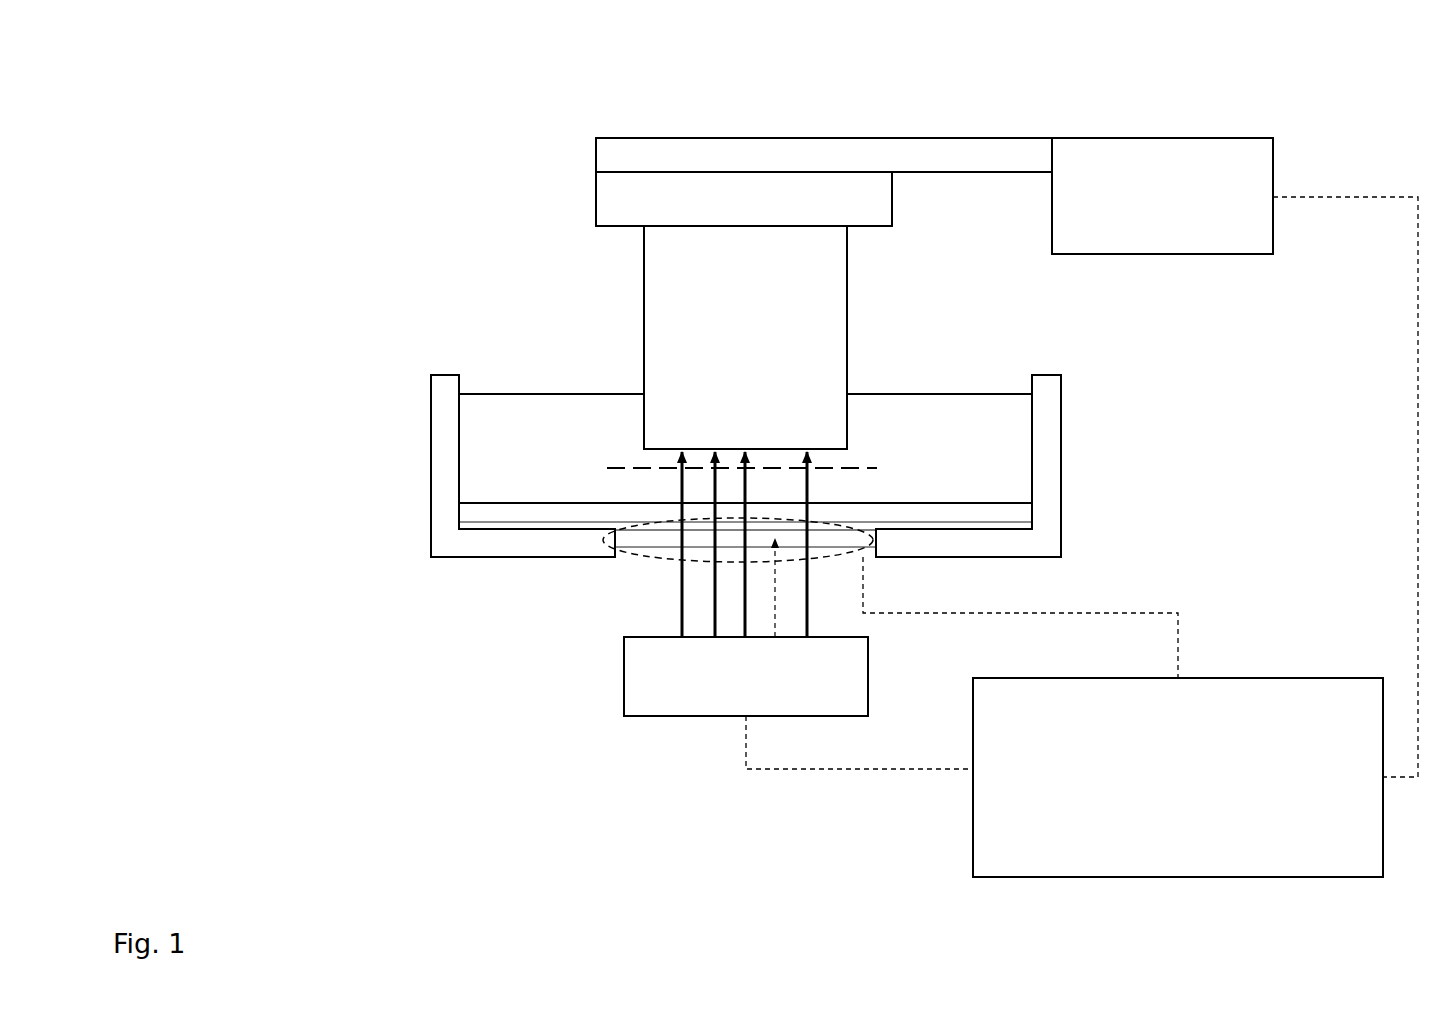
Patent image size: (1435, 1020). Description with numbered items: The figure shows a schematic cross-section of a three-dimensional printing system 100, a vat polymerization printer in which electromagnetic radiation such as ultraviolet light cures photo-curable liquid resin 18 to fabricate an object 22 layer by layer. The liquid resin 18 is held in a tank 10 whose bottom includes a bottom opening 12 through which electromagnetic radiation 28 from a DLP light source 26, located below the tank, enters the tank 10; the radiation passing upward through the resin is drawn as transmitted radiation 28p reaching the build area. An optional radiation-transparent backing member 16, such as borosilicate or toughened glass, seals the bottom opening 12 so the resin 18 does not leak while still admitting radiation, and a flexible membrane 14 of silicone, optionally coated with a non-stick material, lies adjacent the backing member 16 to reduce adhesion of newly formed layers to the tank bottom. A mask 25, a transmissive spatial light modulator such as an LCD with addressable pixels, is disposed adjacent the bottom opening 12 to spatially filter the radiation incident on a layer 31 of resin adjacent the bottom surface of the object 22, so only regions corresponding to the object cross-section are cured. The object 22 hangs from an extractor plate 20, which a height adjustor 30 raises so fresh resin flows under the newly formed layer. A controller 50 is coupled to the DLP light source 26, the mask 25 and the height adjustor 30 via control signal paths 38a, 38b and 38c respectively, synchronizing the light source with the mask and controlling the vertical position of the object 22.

The 3D printing system 100 is at (261, 82).
The tank 10 is at (440, 398).
The bottom opening 12 is at (700, 566).
The flexible membrane 14 is at (462, 510).
The radiation-transparent backing member 16 is at (462, 531).
The liquid resin 18 is at (989, 447).
The extractor plate 20 is at (759, 212).
The object 22 is at (759, 352).
The mask 25 is at (655, 543).
The DLP light source 26 is at (759, 692).
The electromagnetic radiation 28 is at (808, 607).
The transmitted light beam 28p is at (810, 469).
The height adjustor 30 is at (1177, 212).
The layer 31 is at (633, 467).
The control signal path 38a is at (855, 772).
The control signal path 38b is at (1013, 613).
The control signal path 38c is at (1412, 475).
The controller 50 is at (1192, 789).